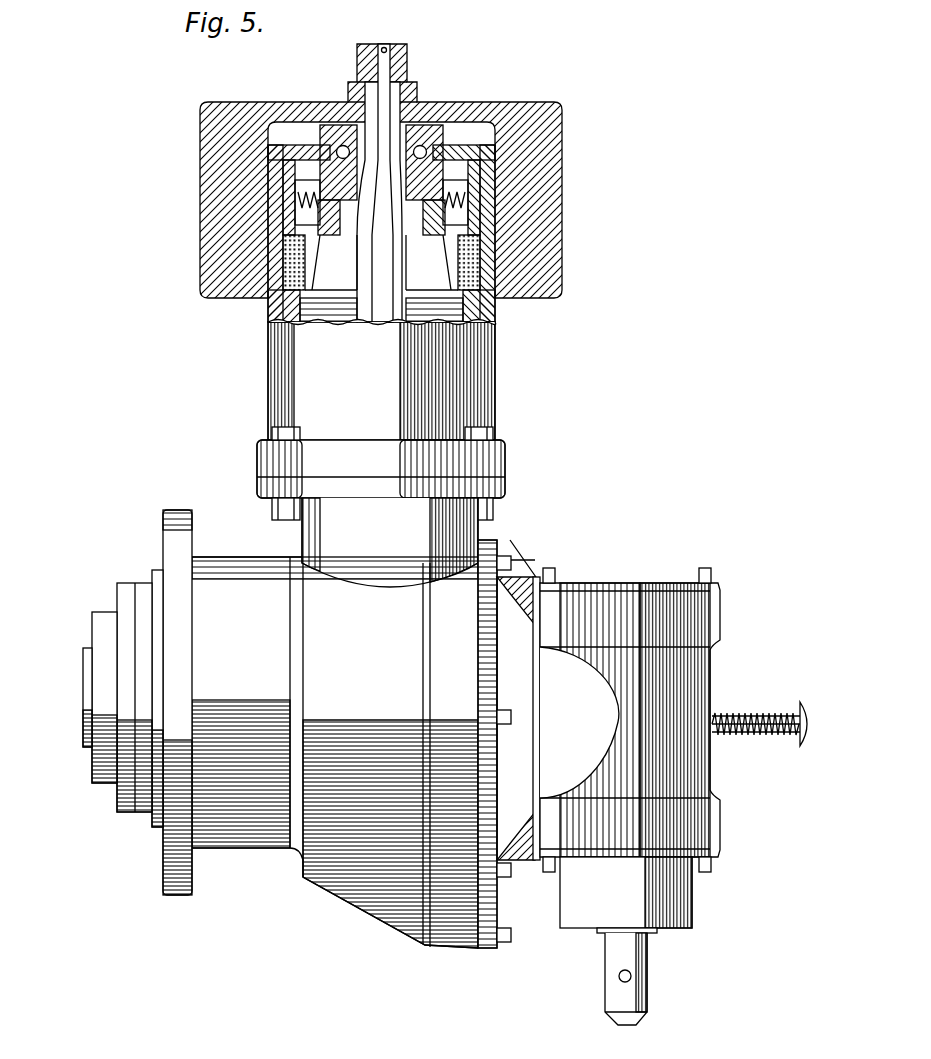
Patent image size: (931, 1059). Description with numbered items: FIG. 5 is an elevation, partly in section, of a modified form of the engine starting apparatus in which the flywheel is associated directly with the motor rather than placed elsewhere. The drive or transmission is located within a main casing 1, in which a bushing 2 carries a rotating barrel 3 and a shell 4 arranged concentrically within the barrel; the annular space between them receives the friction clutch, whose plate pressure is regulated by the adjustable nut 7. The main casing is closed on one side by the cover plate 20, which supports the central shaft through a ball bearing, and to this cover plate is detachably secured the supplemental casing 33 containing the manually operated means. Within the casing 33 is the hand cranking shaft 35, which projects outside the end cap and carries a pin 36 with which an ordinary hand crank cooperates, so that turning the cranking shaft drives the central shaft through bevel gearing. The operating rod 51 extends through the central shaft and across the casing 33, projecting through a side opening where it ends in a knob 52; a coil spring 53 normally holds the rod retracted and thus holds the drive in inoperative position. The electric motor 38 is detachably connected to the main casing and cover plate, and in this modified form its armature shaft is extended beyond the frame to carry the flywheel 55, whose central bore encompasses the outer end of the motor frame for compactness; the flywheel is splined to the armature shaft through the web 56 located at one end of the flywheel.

The main casing 1 is at (221, 560).
The bushing 2 is at (154, 828).
The barrel 3 is at (114, 795).
The shell 4 is at (83, 700).
The adjustable nut 7 is at (93, 768).
The cover plate 20 is at (532, 862).
The supplemental casing 33 is at (716, 654).
The hand cranking shaft 35 is at (647, 952).
The pin 36 is at (631, 977).
The electric motor 38 is at (494, 358).
The operating rod 51 is at (756, 737).
The knob 52 is at (802, 745).
The coil spring 53 is at (743, 711).
The flywheel 55 is at (200, 213).
The web 56 is at (334, 104).